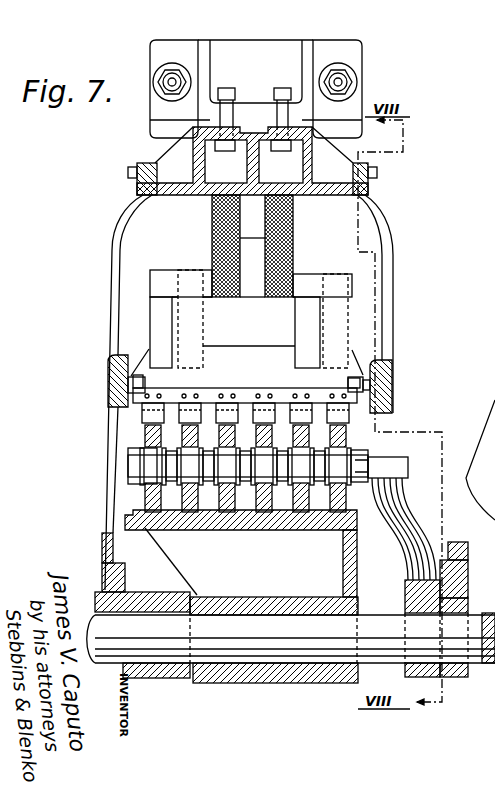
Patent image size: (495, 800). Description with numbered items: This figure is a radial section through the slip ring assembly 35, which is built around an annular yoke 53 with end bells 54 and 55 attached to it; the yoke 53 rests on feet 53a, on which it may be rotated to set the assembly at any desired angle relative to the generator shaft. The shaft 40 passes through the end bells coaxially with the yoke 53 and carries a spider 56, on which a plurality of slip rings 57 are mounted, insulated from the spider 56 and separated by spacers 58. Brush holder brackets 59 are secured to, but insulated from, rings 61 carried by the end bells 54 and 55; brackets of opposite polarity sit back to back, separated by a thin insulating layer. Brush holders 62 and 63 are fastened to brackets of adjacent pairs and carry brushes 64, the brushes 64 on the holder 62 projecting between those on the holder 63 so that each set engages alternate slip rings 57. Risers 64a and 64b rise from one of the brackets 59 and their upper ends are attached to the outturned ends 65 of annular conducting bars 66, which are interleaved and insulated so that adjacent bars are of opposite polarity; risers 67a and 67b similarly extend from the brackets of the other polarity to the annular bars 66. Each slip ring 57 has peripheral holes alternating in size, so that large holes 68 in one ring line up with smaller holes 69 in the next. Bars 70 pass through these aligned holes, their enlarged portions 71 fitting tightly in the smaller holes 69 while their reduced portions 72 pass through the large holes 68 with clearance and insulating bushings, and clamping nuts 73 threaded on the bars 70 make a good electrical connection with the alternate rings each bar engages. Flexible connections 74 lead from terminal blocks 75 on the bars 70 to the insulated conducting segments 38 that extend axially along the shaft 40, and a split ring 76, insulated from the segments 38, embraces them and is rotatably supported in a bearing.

The slip ring assembly 35 is at (118, 153).
The insulated conducting segments 38 is at (458, 592).
The shaft 40 is at (367, 627).
The annular yoke 53 is at (192, 195).
The feet 53a is at (355, 55).
The end bell 54 is at (112, 318).
The end bell 55 is at (393, 316).
The spider 56 is at (355, 545).
The slip rings 57 is at (147, 428).
The spacers 58 is at (212, 527).
The brush holder bracket 59 is at (237, 354).
The rings 61 is at (122, 355).
The brush holder 62 is at (257, 413).
The brush holder 63 is at (300, 413).
The brushes 64 is at (350, 424).
The riser 64a is at (300, 315).
The riser 64b is at (160, 308).
The outturned ends 65 is at (300, 276).
The annular conducting bars 66 is at (293, 232).
The riser 67a is at (343, 307).
The riser 67b is at (193, 313).
The large holes 68 is at (143, 488).
The smaller holes 69 is at (191, 527).
The bars 70 is at (363, 467).
The enlarged portions 71 is at (262, 527).
The reduced portions 72 is at (283, 527).
The clamping nuts 73 is at (235, 527).
The flexible connections 74 is at (407, 505).
The terminal blocks 75 is at (396, 466).
The split ring 76 is at (453, 542).